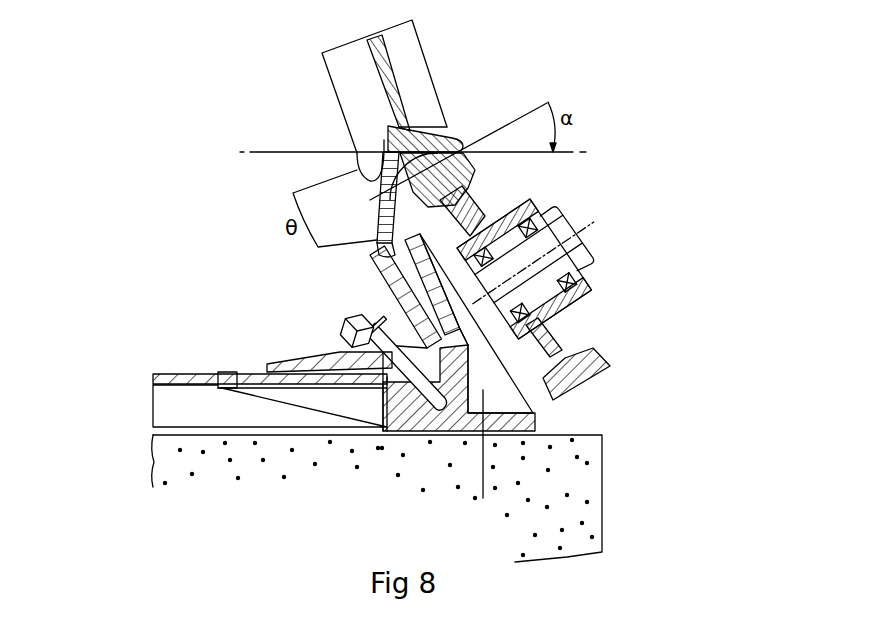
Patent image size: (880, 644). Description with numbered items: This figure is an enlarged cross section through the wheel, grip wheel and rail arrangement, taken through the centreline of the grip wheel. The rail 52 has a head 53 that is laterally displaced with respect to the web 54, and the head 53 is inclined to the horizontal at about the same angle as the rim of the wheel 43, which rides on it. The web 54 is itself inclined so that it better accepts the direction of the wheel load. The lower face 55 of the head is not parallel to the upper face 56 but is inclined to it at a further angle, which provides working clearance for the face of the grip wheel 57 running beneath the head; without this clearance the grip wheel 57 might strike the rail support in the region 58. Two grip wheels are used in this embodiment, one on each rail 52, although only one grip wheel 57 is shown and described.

The wheel 43 is at (337, 92).
The rail 52 is at (390, 292).
The head 53 is at (460, 137).
The web 54 is at (377, 240).
The lower face 55 is at (473, 174).
The upper face 56 is at (433, 133).
The grip wheel 57 is at (597, 283).
The region 58 is at (530, 385).